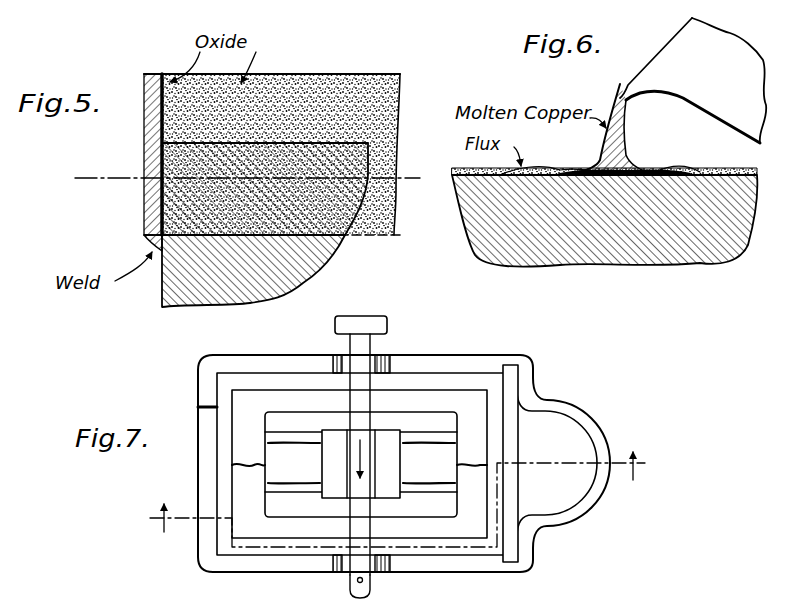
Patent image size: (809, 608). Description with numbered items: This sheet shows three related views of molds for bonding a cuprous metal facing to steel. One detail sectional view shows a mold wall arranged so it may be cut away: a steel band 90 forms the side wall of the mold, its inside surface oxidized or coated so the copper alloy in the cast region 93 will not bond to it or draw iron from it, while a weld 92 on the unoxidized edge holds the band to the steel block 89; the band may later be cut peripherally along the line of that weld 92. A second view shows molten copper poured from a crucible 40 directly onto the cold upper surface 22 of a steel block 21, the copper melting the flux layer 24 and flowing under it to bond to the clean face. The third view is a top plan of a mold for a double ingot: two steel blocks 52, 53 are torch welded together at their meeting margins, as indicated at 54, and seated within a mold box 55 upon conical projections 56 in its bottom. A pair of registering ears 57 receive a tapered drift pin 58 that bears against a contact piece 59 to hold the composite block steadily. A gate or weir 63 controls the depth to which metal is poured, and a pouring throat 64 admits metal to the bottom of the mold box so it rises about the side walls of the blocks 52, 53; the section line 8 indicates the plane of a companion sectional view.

In FIG. 5, the steel band 90 is at (150, 144).
In FIG. 5, the weld metal block 93 is at (149, 178).
In FIG. 5, the weld 92 is at (148, 241).
In FIG. 5, the steel block 89 is at (178, 291).
In FIG. 6, the crucible 40 is at (727, 49).
In FIG. 6, the upper surface 22 is at (706, 169).
In FIG. 6, the flux layer 24 is at (736, 158).
In FIG. 6, the block 21 is at (622, 255).
In FIG. 7, the gate or weir 63 is at (207, 420).
In FIG. 7, the weld 54 is at (232, 465).
In FIG. 7, the contact piece 59 is at (336, 491).
In FIG. 7, the mold box 55 is at (208, 568).
In FIG. 7, the drift pin 58 is at (355, 345).
In FIG. 7, the ears 57 is at (384, 357).
In FIG. 7, the steel block 53 is at (470, 528).
In FIG. 7, the steel block 52 is at (475, 410).
In FIG. 7, the pouring throat 64 is at (576, 485).
In FIG. 7, the conical projections 56 is at (354, 591).
In FIG. 7, the section line 8- 8 is at (395, 499).